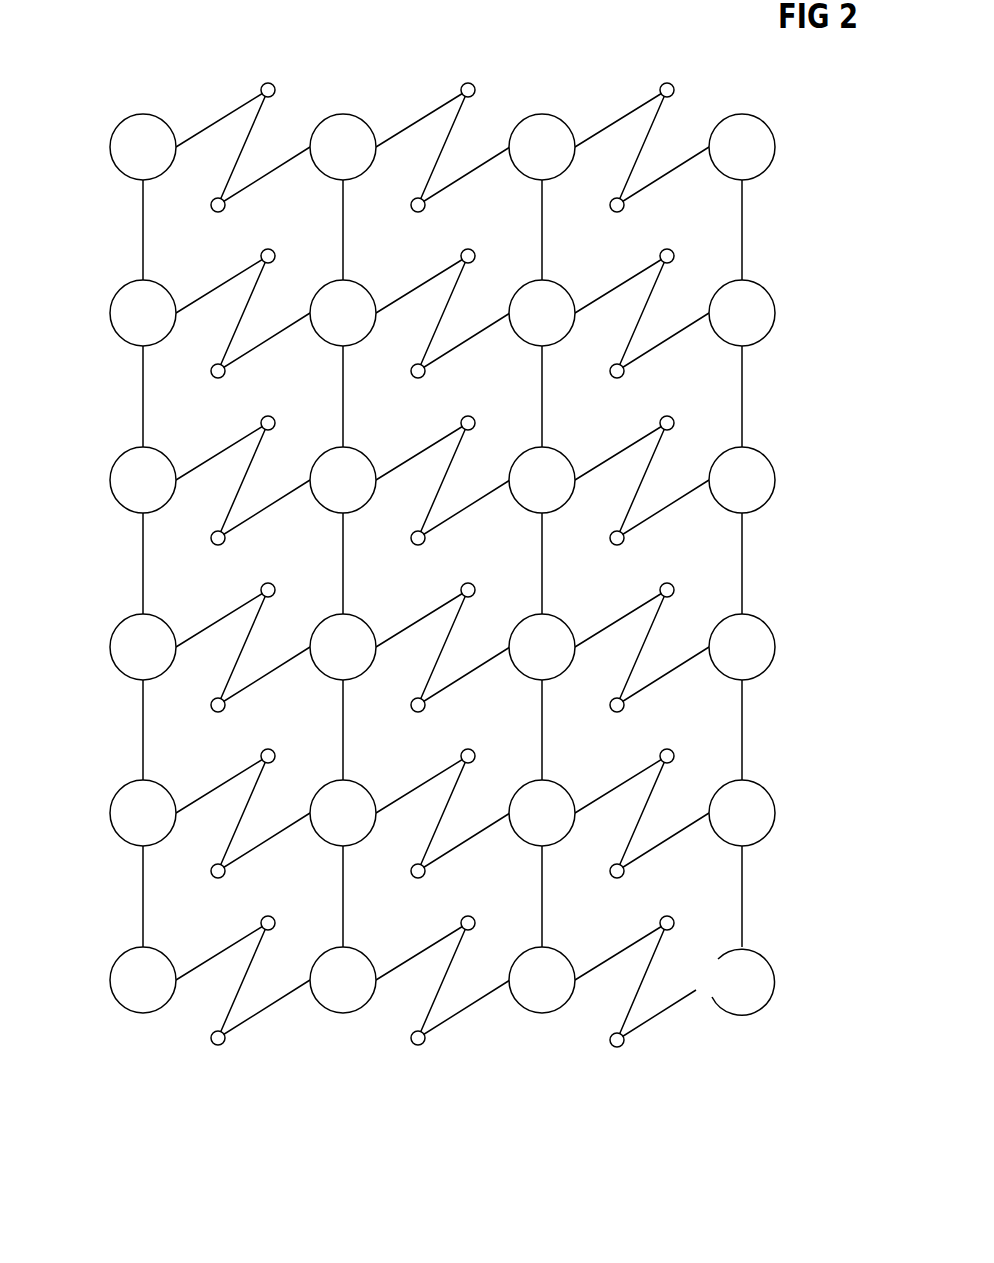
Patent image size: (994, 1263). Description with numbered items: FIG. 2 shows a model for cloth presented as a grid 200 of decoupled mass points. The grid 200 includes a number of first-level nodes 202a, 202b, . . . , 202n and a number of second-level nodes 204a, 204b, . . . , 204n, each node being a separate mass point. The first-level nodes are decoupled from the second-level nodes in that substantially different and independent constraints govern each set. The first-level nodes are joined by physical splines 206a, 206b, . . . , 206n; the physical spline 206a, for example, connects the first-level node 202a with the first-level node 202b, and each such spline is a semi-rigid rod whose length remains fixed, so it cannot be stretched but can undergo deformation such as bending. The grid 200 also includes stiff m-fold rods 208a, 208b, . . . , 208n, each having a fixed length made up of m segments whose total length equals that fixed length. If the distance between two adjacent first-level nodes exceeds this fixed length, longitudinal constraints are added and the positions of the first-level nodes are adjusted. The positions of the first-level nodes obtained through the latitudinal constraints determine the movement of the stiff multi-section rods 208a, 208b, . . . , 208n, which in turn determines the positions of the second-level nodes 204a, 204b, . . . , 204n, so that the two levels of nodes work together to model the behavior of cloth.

The grid 200 is at (488, 1115).
The first-level node 202a is at (110, 148).
The first-level node 202b is at (110, 314).
The first-level node 202n is at (743, 1020).
The second-level node 204a is at (266, 83).
The second-level node 204b is at (464, 83).
The second-level node 204n is at (621, 1047).
The physical spline 206a is at (143, 236).
The physical spline 206b is at (143, 402).
The physical spline 206n is at (743, 902).
The stiff m-fold rod 208a is at (222, 112).
The stiff m-fold rod 208b is at (422, 112).
The stiff m-fold rod 208n is at (628, 947).